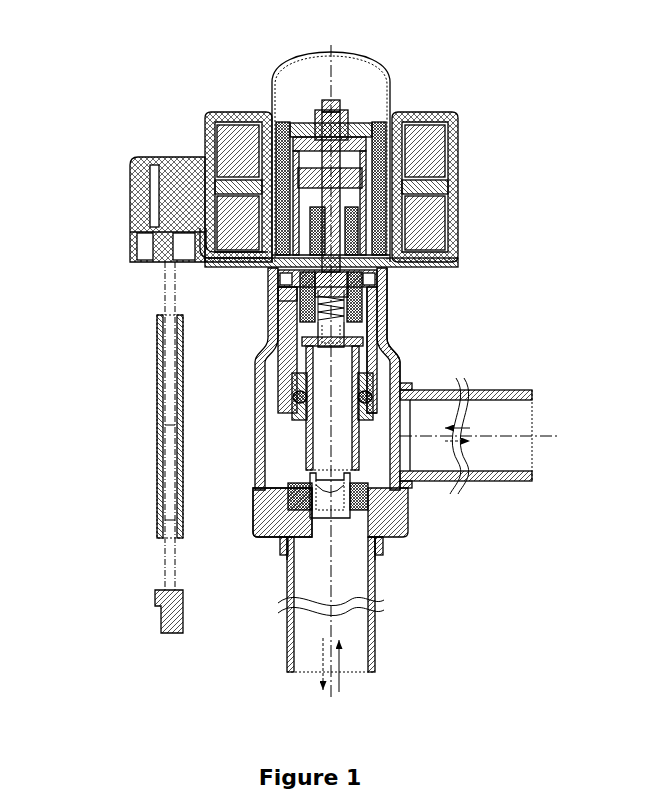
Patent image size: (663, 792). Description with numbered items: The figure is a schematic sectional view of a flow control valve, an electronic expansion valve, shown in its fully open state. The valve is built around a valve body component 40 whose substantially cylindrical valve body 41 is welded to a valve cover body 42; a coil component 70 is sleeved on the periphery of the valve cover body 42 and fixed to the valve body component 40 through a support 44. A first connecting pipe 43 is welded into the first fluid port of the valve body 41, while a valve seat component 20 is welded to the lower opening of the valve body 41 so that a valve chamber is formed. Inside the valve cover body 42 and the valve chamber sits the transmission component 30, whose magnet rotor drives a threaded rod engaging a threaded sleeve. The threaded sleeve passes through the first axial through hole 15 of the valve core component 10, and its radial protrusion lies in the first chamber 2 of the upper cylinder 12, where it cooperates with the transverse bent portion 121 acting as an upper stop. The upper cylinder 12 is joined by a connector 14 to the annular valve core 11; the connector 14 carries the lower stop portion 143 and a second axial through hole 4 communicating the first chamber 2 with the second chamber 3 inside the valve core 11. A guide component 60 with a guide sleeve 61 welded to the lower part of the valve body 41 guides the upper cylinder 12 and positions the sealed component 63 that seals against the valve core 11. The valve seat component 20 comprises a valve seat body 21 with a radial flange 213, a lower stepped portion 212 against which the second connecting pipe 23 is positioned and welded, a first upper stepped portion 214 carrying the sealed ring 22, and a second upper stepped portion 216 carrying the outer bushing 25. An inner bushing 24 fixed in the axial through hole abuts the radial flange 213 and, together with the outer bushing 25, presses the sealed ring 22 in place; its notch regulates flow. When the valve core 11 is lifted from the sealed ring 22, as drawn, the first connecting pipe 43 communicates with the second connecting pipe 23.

The first chamber 2 is at (292, 312).
The second chamber 3 is at (310, 427).
The second axial through hole 4 is at (310, 345).
The valve core component 10 is at (417, 379).
The valve core 11 is at (362, 367).
The upper cylinder 12 is at (292, 305).
The connector 14 is at (302, 337).
The first axial through hole 15 is at (138, 175).
The valve seat component 20 is at (435, 543).
The valve seat body 21 is at (397, 507).
The sealed ring 22 is at (367, 493).
The second connecting pipe 23 is at (357, 582).
The inner bushing 24 is at (303, 518).
The outer bushing 25 is at (365, 512).
The transmission component 30 is at (418, 190).
The valve body component 40 is at (503, 314).
The valve body 41 is at (393, 317).
The valve cover body 42 is at (403, 96).
The first connecting pipe 43 is at (478, 478).
The support 44 is at (403, 268).
The guide component 60 is at (486, 350).
The guide sleeve 61 is at (377, 348).
The sealed component 63 is at (292, 400).
The coil component 70 is at (398, 160).
The transverse bent portion 121 is at (138, 212).
The lower stop portion 143 is at (290, 323).
The lower stepped portion 212 is at (308, 525).
The radial flange 213 is at (300, 548).
The first upper stepped portion 214 is at (288, 512).
The second upper stepped portion 216 is at (283, 498).